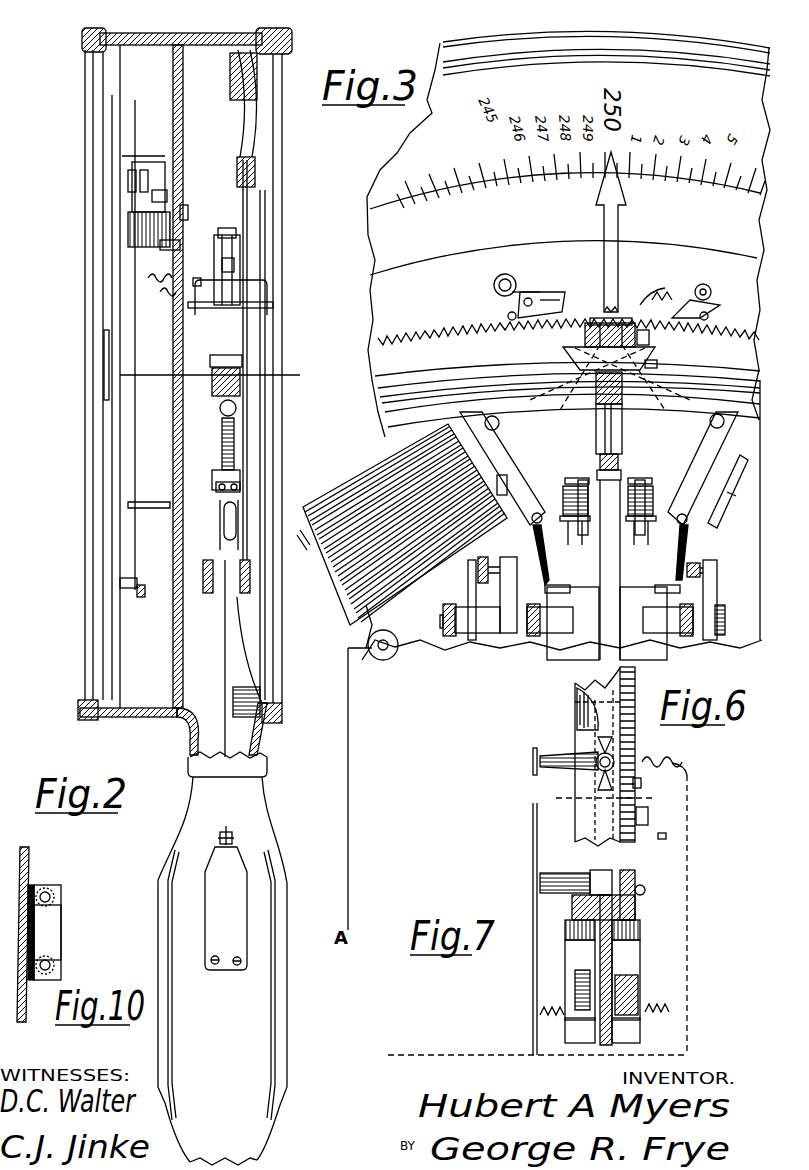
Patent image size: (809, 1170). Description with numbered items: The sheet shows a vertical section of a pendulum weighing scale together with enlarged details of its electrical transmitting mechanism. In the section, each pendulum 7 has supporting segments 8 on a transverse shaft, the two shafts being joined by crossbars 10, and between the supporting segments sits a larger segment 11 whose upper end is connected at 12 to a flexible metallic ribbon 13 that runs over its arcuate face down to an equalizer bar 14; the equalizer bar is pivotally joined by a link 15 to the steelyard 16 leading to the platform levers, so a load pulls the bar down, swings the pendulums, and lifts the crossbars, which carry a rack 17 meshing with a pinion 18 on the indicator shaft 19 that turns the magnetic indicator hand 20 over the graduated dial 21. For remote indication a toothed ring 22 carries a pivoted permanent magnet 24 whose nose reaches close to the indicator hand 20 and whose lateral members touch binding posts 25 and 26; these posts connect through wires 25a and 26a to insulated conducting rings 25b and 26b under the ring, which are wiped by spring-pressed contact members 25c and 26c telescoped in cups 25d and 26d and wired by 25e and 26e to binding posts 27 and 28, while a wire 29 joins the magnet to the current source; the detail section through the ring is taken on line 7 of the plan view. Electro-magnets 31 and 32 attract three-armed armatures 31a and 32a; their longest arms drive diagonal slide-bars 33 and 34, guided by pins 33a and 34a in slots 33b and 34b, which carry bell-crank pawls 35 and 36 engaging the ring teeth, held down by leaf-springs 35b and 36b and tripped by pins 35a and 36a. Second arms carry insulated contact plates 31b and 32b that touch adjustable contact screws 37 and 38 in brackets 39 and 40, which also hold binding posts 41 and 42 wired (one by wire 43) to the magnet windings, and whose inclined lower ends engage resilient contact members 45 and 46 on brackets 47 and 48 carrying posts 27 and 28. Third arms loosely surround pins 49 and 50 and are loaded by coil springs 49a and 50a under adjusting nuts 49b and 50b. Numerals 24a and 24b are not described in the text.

In FIG. 6, the pendulum 7 is at (604, 803).
In FIG. 2, the supporting segment 8 is at (195, 284).
In FIG. 2, the crossbar 10 is at (197, 312).
In FIG. 2, the larger segment 11 is at (238, 246).
In FIG. 2, the connection 12 is at (234, 232).
In FIG. 2, the flexible metallic ribbon 13 is at (236, 266).
In FIG. 2, the equalizer bar 14 is at (240, 489).
In FIG. 2, the link 15 is at (240, 560).
In FIG. 2, the steelyard 16 is at (226, 685).
In FIG. 2, the rack 17 is at (240, 442).
In FIG. 2, the pinion 18 is at (242, 363).
In FIG. 2, the indicator shaft 19 is at (300, 376).
In FIG. 2, the indicator hand 20 is at (108, 337).
In FIG. 3, the indicator hand 20 is at (616, 208).
In FIG. 6, the indicator hand 20 is at (533, 755).
In FIG. 7, the indicator hand 20 is at (533, 848).
In FIG. 2, the dial 21 is at (120, 515).
In FIG. 3, the dial 21 is at (656, 82).
In FIG. 3, the toothed ring 22 is at (424, 348).
In FIG. 7, the toothed ring 22 is at (640, 901).
In FIG. 2, the permanent magnet 24 is at (128, 165).
In FIG. 3, the permanent magnet 24 is at (583, 338).
In FIG. 6, the permanent magnet 24 is at (553, 755).
In FIG. 7, the permanent magnet 24 is at (553, 873).
In FIG. 6, the arm lower portion 24a is at (598, 779).
In FIG. 6, the pivot pin 24b is at (598, 760).
In FIG. 3, the binding post 25 is at (600, 322).
In FIG. 6, the binding post 25 is at (638, 742).
In FIG. 3, the wire 25a is at (567, 356).
In FIG. 6, the wire 25a is at (640, 700).
In FIG. 7, the wire 25a is at (565, 913).
In FIG. 2, the conducting ring 25b is at (130, 585).
In FIG. 6, the conducting ring 25b is at (592, 700).
In FIG. 7, the conducting ring 25b is at (566, 932).
In FIG. 7, the spring-pressed metallic contact member 25c is at (567, 948).
In FIG. 7, the cup 25d is at (574, 972).
In FIG. 3, the wire 25e is at (593, 480).
In FIG. 7, the wire 25e is at (562, 1020).
In FIG. 3, the binding post 26 is at (660, 349).
In FIG. 6, the binding post 26 is at (641, 783).
In FIG. 3, the wire 26a is at (658, 367).
In FIG. 6, the wire 26a is at (648, 818).
In FIG. 2, the conducting ring 26b is at (145, 600).
In FIG. 6, the conducting ring 26b is at (666, 836).
In FIG. 7, the conducting ring 26b is at (640, 923).
In FIG. 7, the spring-pressed metallic contact member 26c is at (641, 962).
In FIG. 7, the cup 26d is at (640, 998).
In FIG. 3, the wire 26e is at (655, 480).
In FIG. 7, the wire 26e is at (640, 1022).
In FIG. 2, the binding post 27 is at (172, 280).
In FIG. 3, the binding post 27 is at (556, 640).
In FIG. 3, the binding post 28 is at (672, 627).
In FIG. 3, the wire 29 is at (757, 492).
In FIG. 6, the wire 29 is at (682, 762).
In FIG. 7, the wire 29 is at (402, 1056).
In FIG. 2, the electro-magnet 31 is at (168, 200).
In FIG. 3, the electro-magnet 31 is at (360, 480).
In FIG. 3, the armature 31a is at (504, 480).
In FIG. 3, the contact plate 31b is at (548, 574).
In FIG. 3, the electro-magnet 32 is at (734, 512).
In FIG. 3, the armature 32a is at (718, 472).
In FIG. 3, the contact plate 32b is at (674, 576).
In FIG. 3, the slide-bar 33 is at (502, 420).
In FIG. 3, the guide-pin 33a is at (527, 290).
In FIG. 3, the elongated slot 33b is at (505, 276).
In FIG. 3, the slide-bar 34 is at (712, 420).
In FIG. 3, the guide-pin 34a is at (709, 288).
In FIG. 3, the elongated slot 34b is at (718, 302).
In FIG. 3, the pawl 35 is at (563, 301).
In FIG. 3, the pin 35a is at (508, 316).
In FIG. 3, the leaf-spring 35b is at (546, 299).
In FIG. 3, the pawl 36 is at (660, 298).
In FIG. 3, the pin 36a is at (709, 316).
In FIG. 3, the leaf-spring 36b is at (666, 296).
In FIG. 10, the adjustable contact screw 37 is at (52, 897).
In FIG. 3, the adjustable contact screw 37 is at (490, 554).
In FIG. 3, the adjustable contact screw 38 is at (708, 565).
In FIG. 10, the metallic bracket 39 is at (58, 918).
In FIG. 3, the metallic bracket 39 is at (510, 640).
In FIG. 2, the metallic bracket 40 is at (186, 212).
In FIG. 3, the metallic bracket 40 is at (718, 603).
In FIG. 2, the binding post 41 is at (180, 248).
In FIG. 10, the binding post 41 is at (55, 968).
In FIG. 3, the binding post 41 is at (470, 640).
In FIG. 3, the binding post 42 is at (726, 626).
In FIG. 3, the wire 43 is at (468, 589).
In FIG. 3, the resilient contact member 45 is at (556, 591).
In FIG. 3, the resilient contact member 46 is at (664, 592).
In FIG. 3, the metallic bracket 47 is at (572, 616).
In FIG. 3, the metallic bracket 48 is at (646, 616).
In FIG. 3, the pin 49 is at (565, 500).
In FIG. 3, the coil spring 49a is at (564, 518).
In FIG. 3, the adjusting nut 49b is at (568, 482).
In FIG. 3, the pin 50 is at (655, 500).
In FIG. 3, the coil spring 50a is at (657, 518).
In FIG. 3, the adjusting nut 50b is at (655, 484).